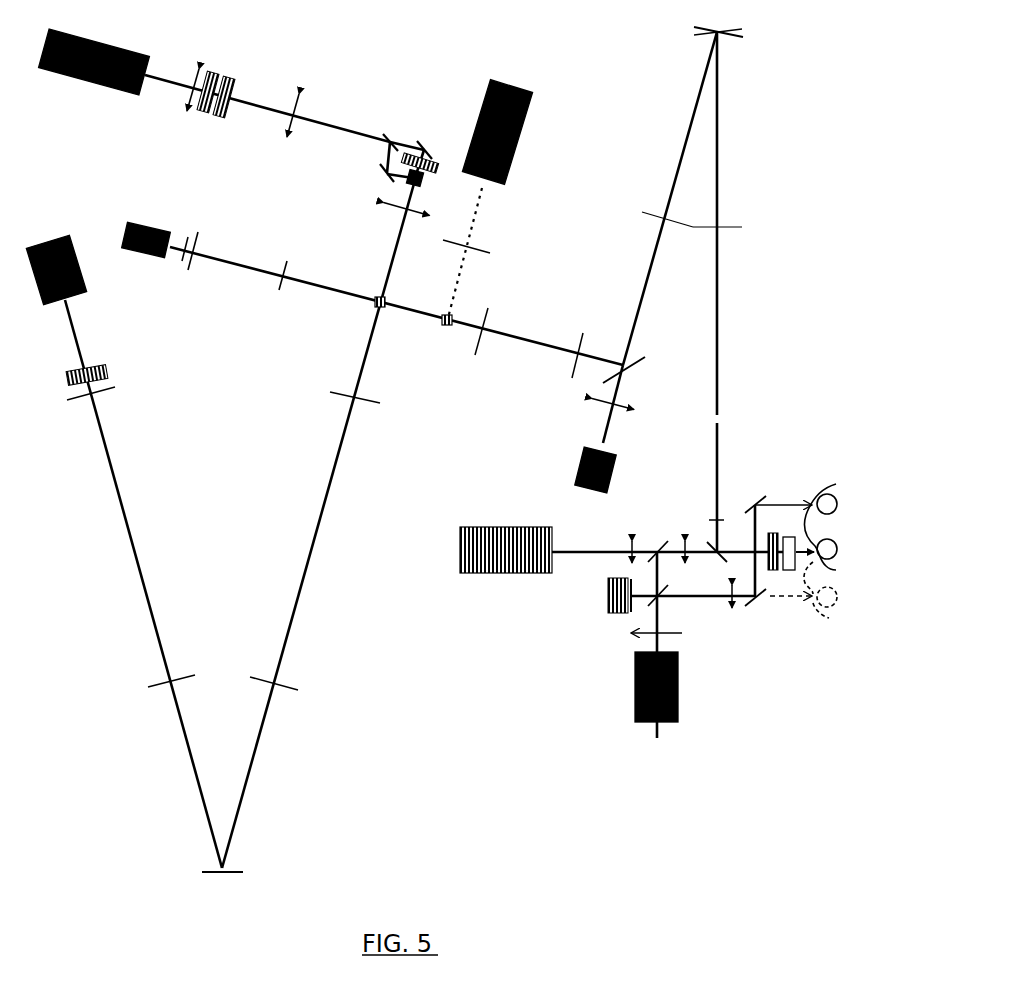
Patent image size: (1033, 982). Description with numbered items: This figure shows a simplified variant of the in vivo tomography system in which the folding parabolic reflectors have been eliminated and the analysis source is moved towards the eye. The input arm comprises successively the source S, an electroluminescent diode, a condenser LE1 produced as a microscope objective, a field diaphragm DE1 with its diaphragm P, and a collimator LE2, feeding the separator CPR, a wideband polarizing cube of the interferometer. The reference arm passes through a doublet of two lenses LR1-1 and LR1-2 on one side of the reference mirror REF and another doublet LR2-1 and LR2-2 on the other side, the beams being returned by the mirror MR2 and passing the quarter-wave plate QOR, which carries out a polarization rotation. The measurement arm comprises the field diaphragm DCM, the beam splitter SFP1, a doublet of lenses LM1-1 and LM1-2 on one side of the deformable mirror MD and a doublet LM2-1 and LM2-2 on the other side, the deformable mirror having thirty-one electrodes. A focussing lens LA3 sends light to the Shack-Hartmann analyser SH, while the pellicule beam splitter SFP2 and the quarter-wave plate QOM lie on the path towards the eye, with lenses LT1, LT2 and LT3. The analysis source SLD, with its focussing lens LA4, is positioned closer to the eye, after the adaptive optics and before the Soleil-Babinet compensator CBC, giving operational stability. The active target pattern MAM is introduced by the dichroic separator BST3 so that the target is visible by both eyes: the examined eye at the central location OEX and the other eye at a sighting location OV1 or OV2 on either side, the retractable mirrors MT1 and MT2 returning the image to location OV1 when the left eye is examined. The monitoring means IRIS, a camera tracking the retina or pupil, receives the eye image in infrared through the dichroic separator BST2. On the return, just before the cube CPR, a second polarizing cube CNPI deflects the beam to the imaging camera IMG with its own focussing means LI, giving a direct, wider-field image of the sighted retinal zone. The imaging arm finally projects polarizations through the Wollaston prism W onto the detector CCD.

The detector CCD is at (94, 69).
The Wollaston prism W is at (198, 114).
The imaging camera IMG is at (497, 122).
The focussing means LI is at (476, 250).
The reference mirror REF is at (56, 260).
The source S is at (146, 231).
The field diaphragm P is at (194, 243).
The condenser LE1 is at (169, 258).
The field diaphragm DE1 is at (204, 263).
The collimator LE2 is at (275, 290).
The separator CPR is at (362, 310).
The second polarizing cube CNPI is at (436, 335).
The lens LM1-1 is at (474, 344).
The field diaphragm DCM is at (585, 340).
The beam splitter SFP1 is at (638, 370).
The focussing lens LA3 is at (596, 407).
The Shack-Hartmann analyser SH is at (587, 470).
The lens LM1-2 is at (648, 206).
The lens LM2-1 is at (729, 216).
The deformable mirror MD is at (718, 24).
The lens LM2-2 is at (690, 506).
The quarter-wave plate QOR is at (103, 373).
The lens LR2-2 is at (66, 406).
The lens LR1-1 is at (375, 422).
The lens LR2-1 is at (141, 689).
The lens LR1-2 is at (301, 689).
The second mirror MR2 is at (222, 886).
The eye movement monitoring means IRIS is at (506, 560).
The lens LT3 is at (622, 545).
The separator BST2 is at (656, 545).
The lens LT1 is at (692, 545).
The pellicule beam splitter SFP2 is at (715, 560).
The quarter-wave plate QOM is at (762, 551).
The mirror MT2 is at (755, 496).
The mirror MT1 is at (755, 607).
The lens LT2 is at (727, 605).
The sighting location OV1 is at (843, 504).
The examination location OEX is at (836, 527).
The sighting location OV2 is at (836, 590).
The Soleil-Babinet compensator CBC is at (789, 571).
The active target pattern MAM is at (601, 595).
The separator BST3 is at (668, 601).
The focussing lens LA4 is at (642, 634).
The analysis source SLD is at (648, 687).